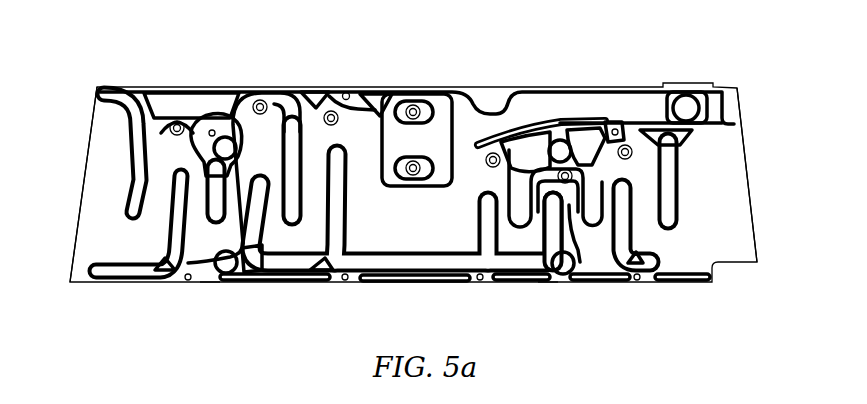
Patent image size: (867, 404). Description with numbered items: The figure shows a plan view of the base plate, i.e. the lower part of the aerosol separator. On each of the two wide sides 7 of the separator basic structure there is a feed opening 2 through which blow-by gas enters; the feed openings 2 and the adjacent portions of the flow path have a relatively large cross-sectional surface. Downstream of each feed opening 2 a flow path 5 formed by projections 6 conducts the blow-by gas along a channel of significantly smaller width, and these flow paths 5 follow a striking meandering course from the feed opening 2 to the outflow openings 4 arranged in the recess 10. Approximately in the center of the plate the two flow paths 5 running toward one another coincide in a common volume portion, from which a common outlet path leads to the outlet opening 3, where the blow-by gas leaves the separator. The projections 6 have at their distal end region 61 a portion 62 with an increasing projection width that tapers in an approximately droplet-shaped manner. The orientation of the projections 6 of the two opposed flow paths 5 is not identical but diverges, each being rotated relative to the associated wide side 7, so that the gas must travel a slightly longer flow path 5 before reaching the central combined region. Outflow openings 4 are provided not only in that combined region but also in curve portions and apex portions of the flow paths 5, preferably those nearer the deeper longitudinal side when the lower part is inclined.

The feed opening 2 is at (92, 163).
The outlet opening 3 is at (680, 105).
The outflow opening 4 is at (330, 110).
The flow path 5 is at (210, 287).
The projection 6 is at (664, 188).
The wide side 7 is at (88, 187).
The recess 10 is at (395, 98).
The distal end region 61 is at (270, 205).
The portion with increasing projection width 62 is at (180, 120).